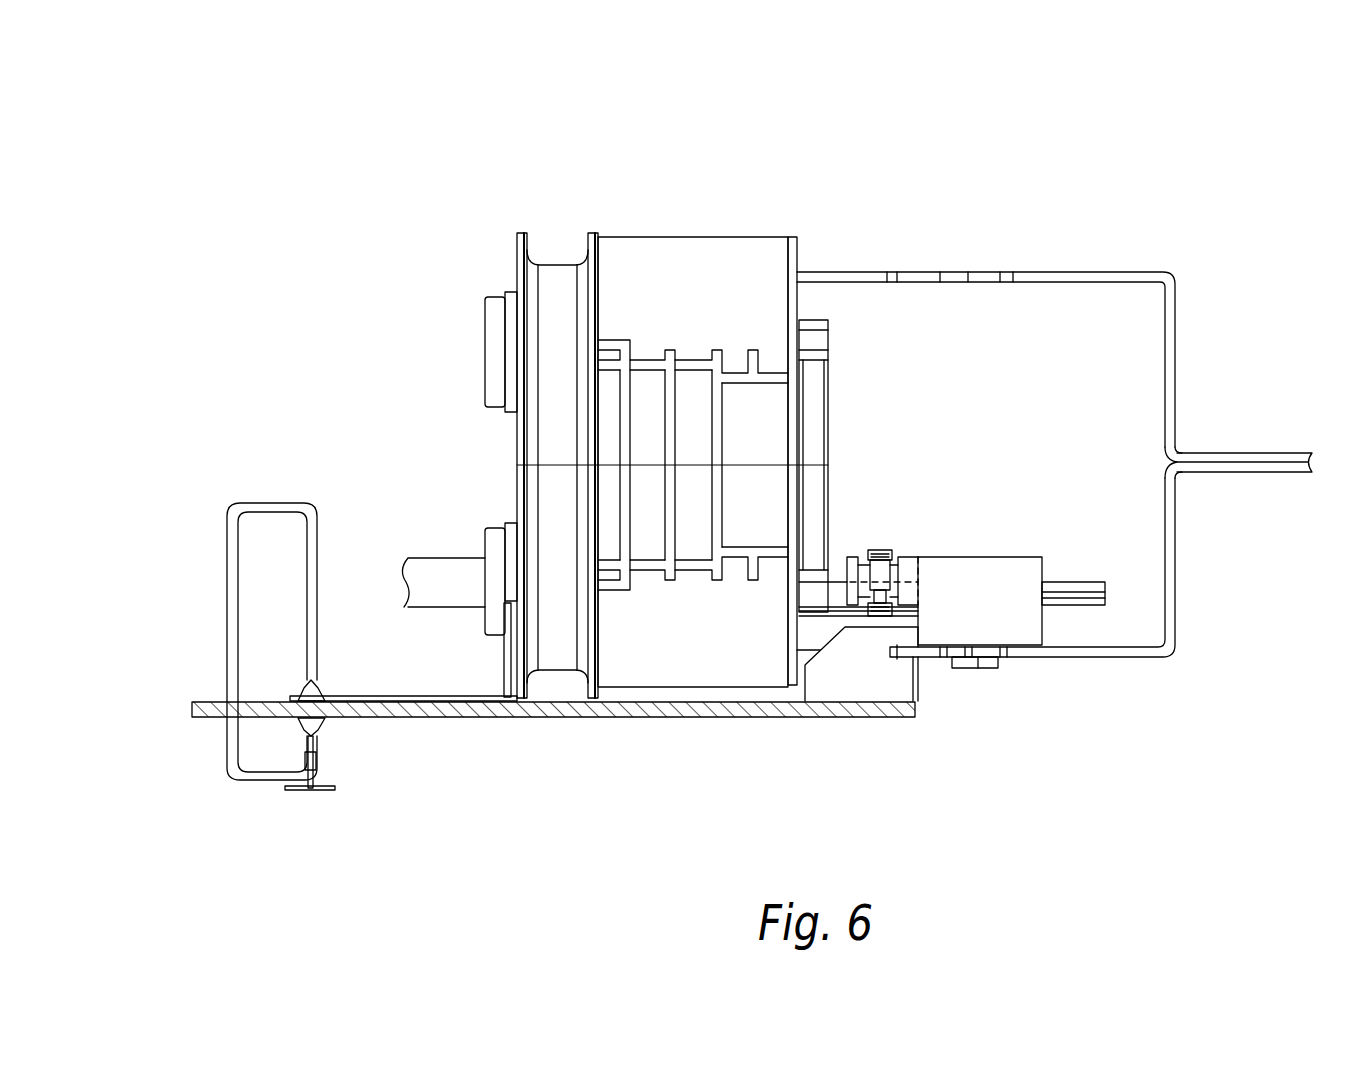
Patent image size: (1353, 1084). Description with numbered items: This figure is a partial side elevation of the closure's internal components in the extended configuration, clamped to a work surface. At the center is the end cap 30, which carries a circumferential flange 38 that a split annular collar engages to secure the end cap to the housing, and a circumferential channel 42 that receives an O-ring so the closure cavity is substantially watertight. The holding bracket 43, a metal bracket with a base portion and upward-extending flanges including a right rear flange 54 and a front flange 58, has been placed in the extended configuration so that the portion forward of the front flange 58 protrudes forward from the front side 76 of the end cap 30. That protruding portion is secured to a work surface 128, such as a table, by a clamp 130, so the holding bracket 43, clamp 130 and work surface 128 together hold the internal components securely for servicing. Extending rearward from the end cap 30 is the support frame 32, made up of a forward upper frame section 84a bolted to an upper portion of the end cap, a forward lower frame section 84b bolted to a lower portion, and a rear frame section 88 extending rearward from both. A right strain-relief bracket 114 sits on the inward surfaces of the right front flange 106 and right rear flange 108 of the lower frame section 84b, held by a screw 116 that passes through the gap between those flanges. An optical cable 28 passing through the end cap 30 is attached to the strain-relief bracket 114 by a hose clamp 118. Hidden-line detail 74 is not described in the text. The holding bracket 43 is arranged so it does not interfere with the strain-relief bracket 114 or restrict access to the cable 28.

The optical cable 28 is at (437, 568).
The end cap 30 is at (749, 233).
The support frame 32 is at (1190, 445).
The circumferential flange 38 is at (520, 233).
The circumferential channel 42 is at (563, 245).
The holding bracket 43 is at (478, 690).
The right rear flange 54 is at (855, 683).
The front flange 58 is at (502, 647).
The end housing 74 is at (797, 300).
The front side 76 is at (517, 263).
The forward upper frame section 84a is at (1131, 272).
The forward lower frame section 84b is at (1148, 657).
The rear frame section 88 is at (1272, 474).
The right front flange 106 is at (928, 658).
The right rear flange 108 is at (1030, 657).
The right strain-relief bracket 114 is at (1008, 613).
The screw 116 is at (978, 668).
The hose clamp 118 is at (878, 550).
The work surface 128 is at (193, 720).
The clamp 130 is at (258, 502).